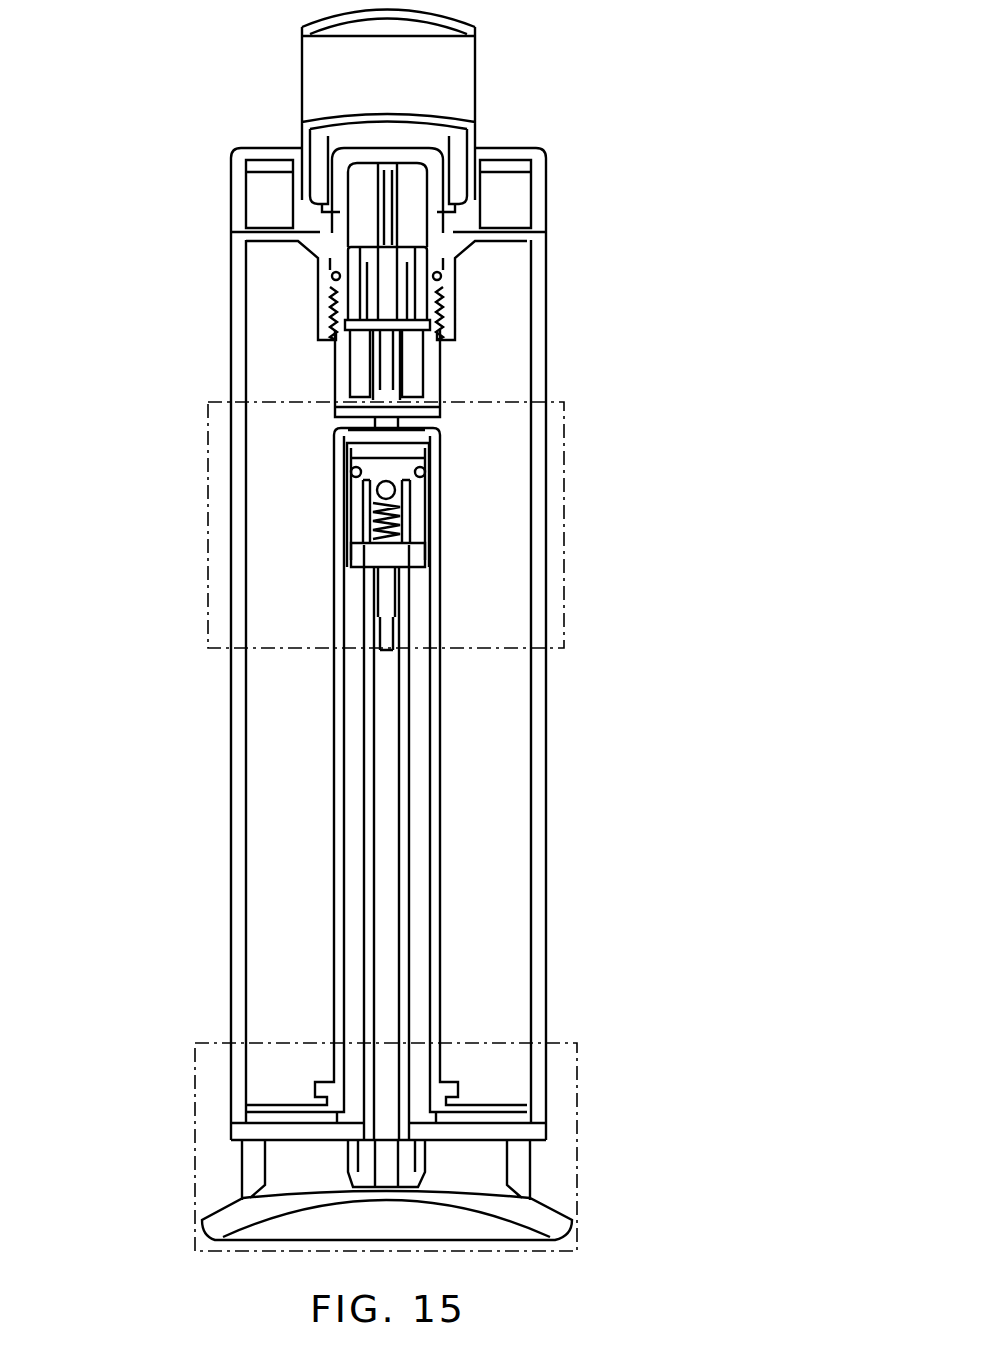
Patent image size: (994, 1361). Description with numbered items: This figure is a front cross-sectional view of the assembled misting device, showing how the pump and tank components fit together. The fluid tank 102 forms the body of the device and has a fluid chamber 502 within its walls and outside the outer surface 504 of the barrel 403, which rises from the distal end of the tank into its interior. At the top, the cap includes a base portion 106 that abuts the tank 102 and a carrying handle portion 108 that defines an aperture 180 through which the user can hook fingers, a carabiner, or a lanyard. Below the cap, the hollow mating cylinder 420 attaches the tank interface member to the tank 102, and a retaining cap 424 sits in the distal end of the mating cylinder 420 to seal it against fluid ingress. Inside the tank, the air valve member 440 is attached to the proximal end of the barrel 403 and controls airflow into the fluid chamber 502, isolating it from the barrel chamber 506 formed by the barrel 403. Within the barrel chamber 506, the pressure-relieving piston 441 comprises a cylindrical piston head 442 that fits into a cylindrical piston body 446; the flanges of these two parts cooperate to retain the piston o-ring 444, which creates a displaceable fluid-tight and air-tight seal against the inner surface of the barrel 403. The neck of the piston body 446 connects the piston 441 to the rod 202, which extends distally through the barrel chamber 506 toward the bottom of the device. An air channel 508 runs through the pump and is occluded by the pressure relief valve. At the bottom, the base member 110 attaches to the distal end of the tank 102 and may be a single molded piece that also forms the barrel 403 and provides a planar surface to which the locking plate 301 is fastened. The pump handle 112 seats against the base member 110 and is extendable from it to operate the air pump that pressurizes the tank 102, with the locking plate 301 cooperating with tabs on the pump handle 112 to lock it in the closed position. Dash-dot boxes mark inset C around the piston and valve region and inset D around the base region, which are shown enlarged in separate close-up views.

The fluid tank 102 is at (546, 292).
The base portion 106 is at (546, 176).
The carrying handle portion 108 is at (320, 26).
The aperture 180 is at (458, 50).
The mating cylinder 420 is at (243, 242).
The retaining cap 424 is at (345, 376).
The air valve member 440 is at (338, 422).
The pressure-relieving piston 441 is at (342, 553).
The piston head 442 is at (424, 460).
The piston o-ring 444 is at (340, 474).
The piston body 446 is at (414, 558).
The rod 202 is at (413, 667).
The barrel 403 is at (436, 760).
The outer surface 504 is at (324, 714).
The barrel chamber 506 is at (347, 965).
The air channel 508 is at (386, 802).
The fluid chamber 502 is at (512, 926).
The base member 110 is at (216, 1127).
The pump handle 112 is at (223, 1208).
The locking plate 301 is at (517, 1143).
The inset C is at (566, 493).
The inset D is at (581, 1122).